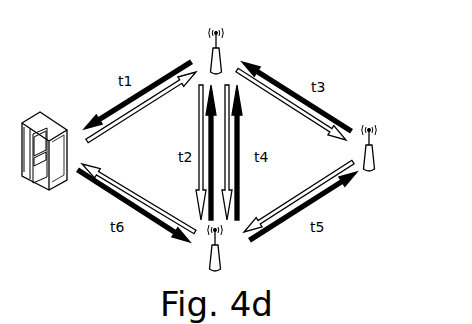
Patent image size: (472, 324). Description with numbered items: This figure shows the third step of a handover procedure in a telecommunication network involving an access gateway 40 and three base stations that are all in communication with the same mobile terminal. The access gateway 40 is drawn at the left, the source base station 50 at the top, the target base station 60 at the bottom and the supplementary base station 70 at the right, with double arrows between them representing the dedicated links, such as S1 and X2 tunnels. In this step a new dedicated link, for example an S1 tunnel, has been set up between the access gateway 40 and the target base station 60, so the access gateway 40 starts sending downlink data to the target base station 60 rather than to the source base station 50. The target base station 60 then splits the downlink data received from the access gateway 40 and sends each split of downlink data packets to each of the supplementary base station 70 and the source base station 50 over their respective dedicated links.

The access gateway 40 is at (46, 110).
The source base station 50 is at (228, 52).
The target base station 60 is at (227, 247).
The supplementary base station 70 is at (380, 148).